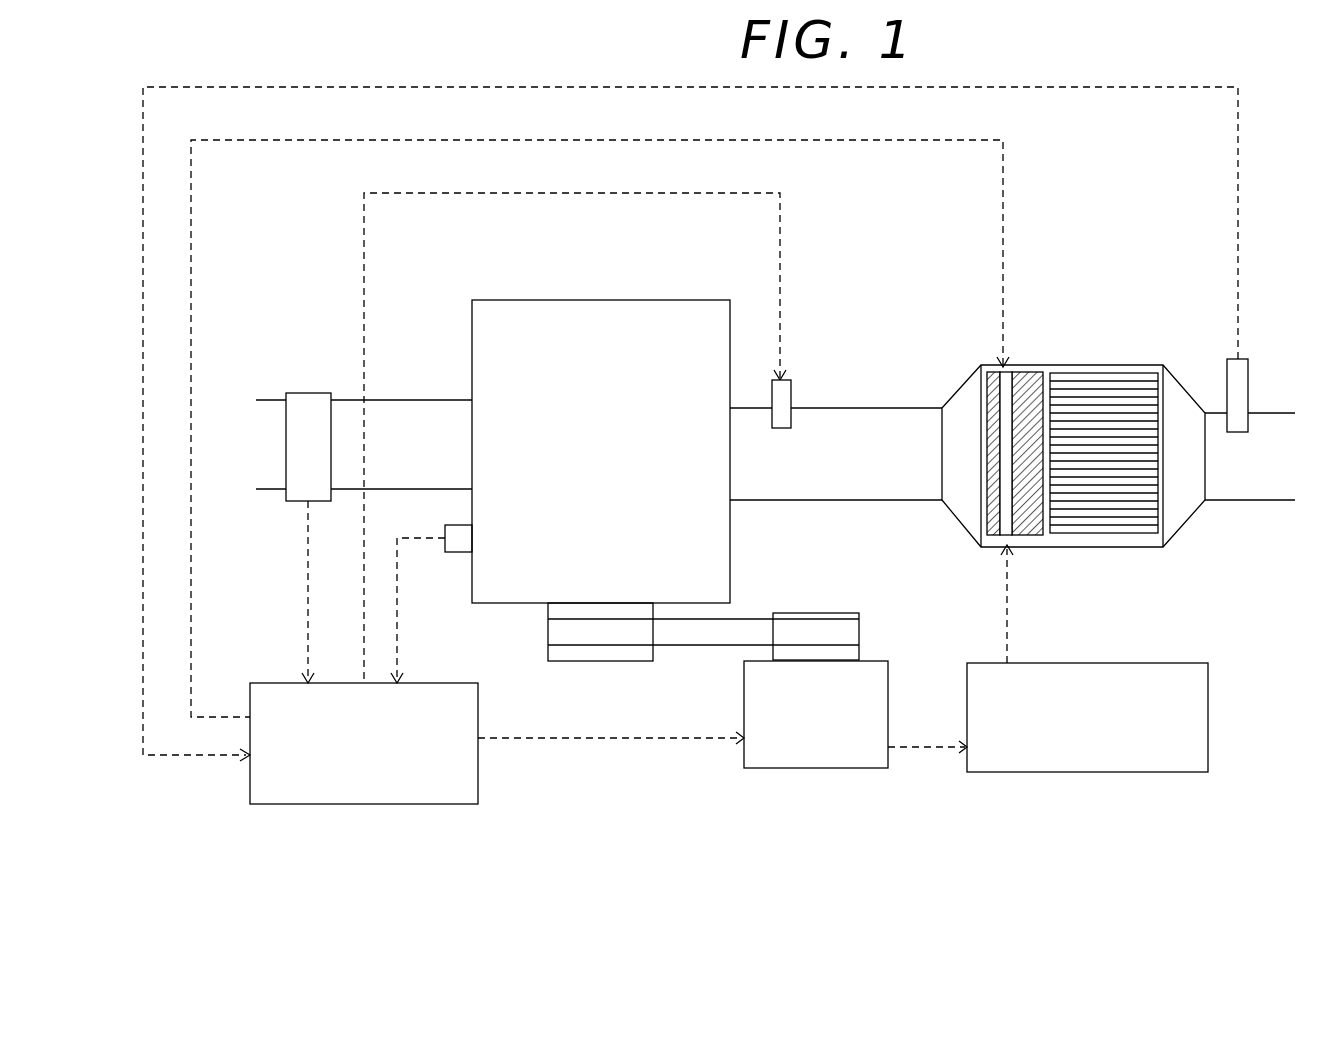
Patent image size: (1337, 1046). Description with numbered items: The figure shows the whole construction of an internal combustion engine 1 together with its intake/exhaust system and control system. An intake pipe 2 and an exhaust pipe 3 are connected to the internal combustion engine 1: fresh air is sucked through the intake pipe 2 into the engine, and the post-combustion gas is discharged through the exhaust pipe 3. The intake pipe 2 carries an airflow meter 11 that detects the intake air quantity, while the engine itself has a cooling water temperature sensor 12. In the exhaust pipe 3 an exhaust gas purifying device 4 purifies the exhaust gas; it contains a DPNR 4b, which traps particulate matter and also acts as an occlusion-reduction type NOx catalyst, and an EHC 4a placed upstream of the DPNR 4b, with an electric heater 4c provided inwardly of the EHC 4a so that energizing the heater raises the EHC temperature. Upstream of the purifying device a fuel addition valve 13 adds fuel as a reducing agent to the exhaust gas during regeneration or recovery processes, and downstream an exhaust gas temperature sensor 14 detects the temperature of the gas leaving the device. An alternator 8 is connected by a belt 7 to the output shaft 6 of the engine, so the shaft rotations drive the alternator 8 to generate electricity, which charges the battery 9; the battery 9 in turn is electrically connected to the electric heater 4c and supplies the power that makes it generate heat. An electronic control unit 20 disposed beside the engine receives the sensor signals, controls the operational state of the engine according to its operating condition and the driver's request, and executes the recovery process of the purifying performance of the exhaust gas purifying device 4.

The internal combustion engine 1 is at (590, 302).
The intake pipe 2 is at (400, 400).
The exhaust pipe 3 is at (862, 408).
The exhaust gas purifying device 4 is at (1108, 436).
The EHC 4a is at (1028, 370).
The DPNR 4b is at (1090, 547).
The electric heater 4c is at (1000, 423).
The output shaft 6 is at (600, 661).
The belt 7 is at (745, 630).
The alternator 8 is at (818, 768).
The battery 9 is at (1085, 772).
The airflow meter 11 is at (308, 393).
The cooling water temperature sensor 12 is at (455, 553).
The fuel addition valve 13 is at (791, 390).
The exhaust gas temperature sensor 14 is at (1248, 398).
The electronic control unit 20 is at (365, 804).